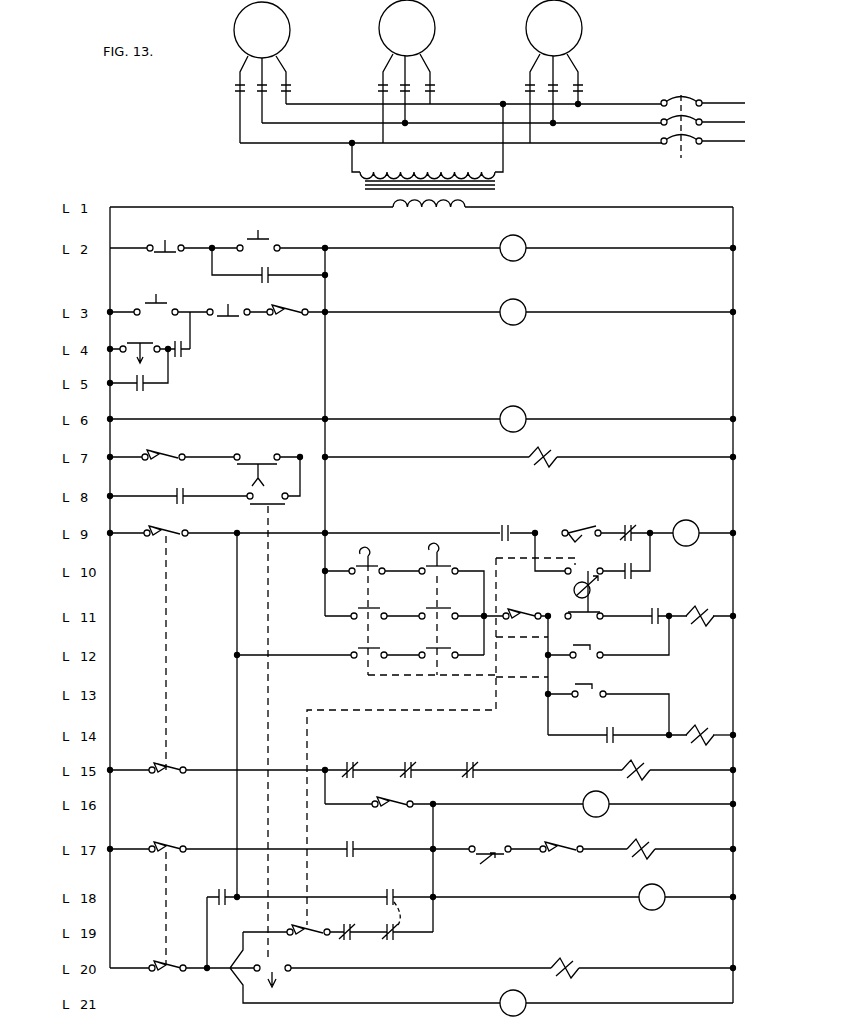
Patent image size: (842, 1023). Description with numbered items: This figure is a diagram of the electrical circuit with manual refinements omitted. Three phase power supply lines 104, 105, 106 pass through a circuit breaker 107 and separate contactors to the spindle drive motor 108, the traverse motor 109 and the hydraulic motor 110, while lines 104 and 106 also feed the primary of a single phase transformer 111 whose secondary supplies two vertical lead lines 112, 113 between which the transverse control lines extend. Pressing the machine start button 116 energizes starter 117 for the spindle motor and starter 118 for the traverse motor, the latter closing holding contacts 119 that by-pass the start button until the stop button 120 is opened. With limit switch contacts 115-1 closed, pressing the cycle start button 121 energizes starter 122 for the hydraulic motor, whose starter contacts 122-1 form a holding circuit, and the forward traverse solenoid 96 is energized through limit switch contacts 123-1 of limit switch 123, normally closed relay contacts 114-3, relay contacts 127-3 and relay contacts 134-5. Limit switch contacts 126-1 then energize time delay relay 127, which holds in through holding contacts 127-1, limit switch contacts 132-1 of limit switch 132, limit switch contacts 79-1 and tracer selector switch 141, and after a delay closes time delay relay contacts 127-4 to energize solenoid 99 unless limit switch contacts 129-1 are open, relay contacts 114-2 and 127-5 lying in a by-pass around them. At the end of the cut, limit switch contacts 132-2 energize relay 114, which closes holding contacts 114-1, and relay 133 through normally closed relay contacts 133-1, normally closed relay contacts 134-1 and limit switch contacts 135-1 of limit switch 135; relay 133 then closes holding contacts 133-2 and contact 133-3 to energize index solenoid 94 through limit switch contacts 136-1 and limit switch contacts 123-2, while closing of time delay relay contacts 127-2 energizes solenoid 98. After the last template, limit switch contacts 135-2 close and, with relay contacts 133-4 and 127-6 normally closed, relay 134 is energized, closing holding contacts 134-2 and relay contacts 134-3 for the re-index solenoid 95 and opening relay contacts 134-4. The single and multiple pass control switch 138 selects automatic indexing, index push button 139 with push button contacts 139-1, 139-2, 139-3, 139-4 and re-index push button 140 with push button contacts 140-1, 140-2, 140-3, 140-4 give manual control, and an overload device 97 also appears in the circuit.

The hydraulic motor 110 is at (271, 72).
The traverse motor 109 is at (415, 71).
The spindle drive motor 108 is at (562, 71).
The circuit breaker 107 is at (681, 117).
The three phase power supply line 104 is at (738, 104).
The three phase power supply line 105 is at (738, 123).
The three phase power supply line 106 is at (738, 142).
The single phase transformer 111 is at (500, 176).
The vertical lead line 112 is at (110, 227).
The vertical lead line 113 is at (733, 232).
The stop button 120 is at (167, 239).
The machine start button 116 is at (260, 236).
The holding contacts 119 is at (268, 265).
The starter 117 is at (524, 244).
The starter 118 is at (529, 308).
The cycle start button 121 is at (156, 300).
The limit switch contacts 115-1 is at (258, 318).
The relay contacts 134-4 is at (140, 345).
The starter contacts 122-1 is at (184, 348).
The normally closed relay contacts 114-3 is at (254, 576).
The starter 122 is at (421, 414).
The limit switch contacts 129-1 is at (165, 447).
The time delay relay contacts 127-4 is at (258, 460).
The solenoid 99 is at (529, 449).
The relay contacts 114-2 is at (199, 489).
The relay contacts 127-5 is at (282, 726).
The limit switch contacts 123-2 is at (176, 523).
The limit switch 123 is at (166, 636).
The relay contacts 133-4 is at (505, 525).
The limit switch contacts 135-2 is at (584, 525).
The relay contacts 127-6 is at (640, 523).
The relay 134 is at (689, 526).
The holding contacts 134-2 is at (594, 556).
The limit switch 135 is at (497, 694).
The index push button 139 is at (377, 611).
The push button contacts 139-1 is at (372, 574).
The push button contacts 139-2 is at (380, 606).
The push button contacts 139-3 is at (380, 650).
The re-index push button 140 is at (447, 607).
The push button contacts 140-1 is at (452, 555).
The push button contacts 140-2 is at (446, 610).
The push button contacts 140-3 is at (452, 640).
The limit switch contacts 136-1 is at (525, 607).
The single and multiple pass control switch 138 is at (586, 619).
The relay contacts 134-3 is at (657, 609).
The re-index solenoid 95 is at (703, 610).
The push button contacts 140-4 is at (598, 645).
The push button contacts 139-4 is at (598, 684).
The contact 133-3 is at (617, 727).
The index solenoid 94 is at (709, 725).
The limit switch contacts 123-1 is at (178, 776).
The relay contacts 127-3 is at (414, 759).
The relay contacts 134-5 is at (477, 759).
The forward traverse solenoid 96 is at (641, 763).
The limit switch contacts 126-1 is at (401, 796).
The time delay relay 127 is at (586, 800).
The limit switch contacts 132-1 is at (171, 839).
The limit switch 132 is at (166, 899).
The holding contacts 127-1 is at (357, 839).
The tracer selector switch 141 is at (492, 843).
The limit switch contacts 79-1 is at (561, 839).
The overload device 97 is at (644, 842).
The holding contacts 114-1 is at (214, 890).
The holding contacts 133-2 is at (399, 898).
The relay 133 is at (660, 892).
The limit switch contacts 135-1 is at (305, 932).
The normally closed relay contacts 134-1 is at (354, 940).
The normally closed relay contacts 133-1 is at (406, 940).
The solenoid 98 is at (572, 958).
The limit switch contacts 132-2 is at (171, 979).
The time delay relay contacts 127-2 is at (287, 978).
The relay 114 is at (505, 999).